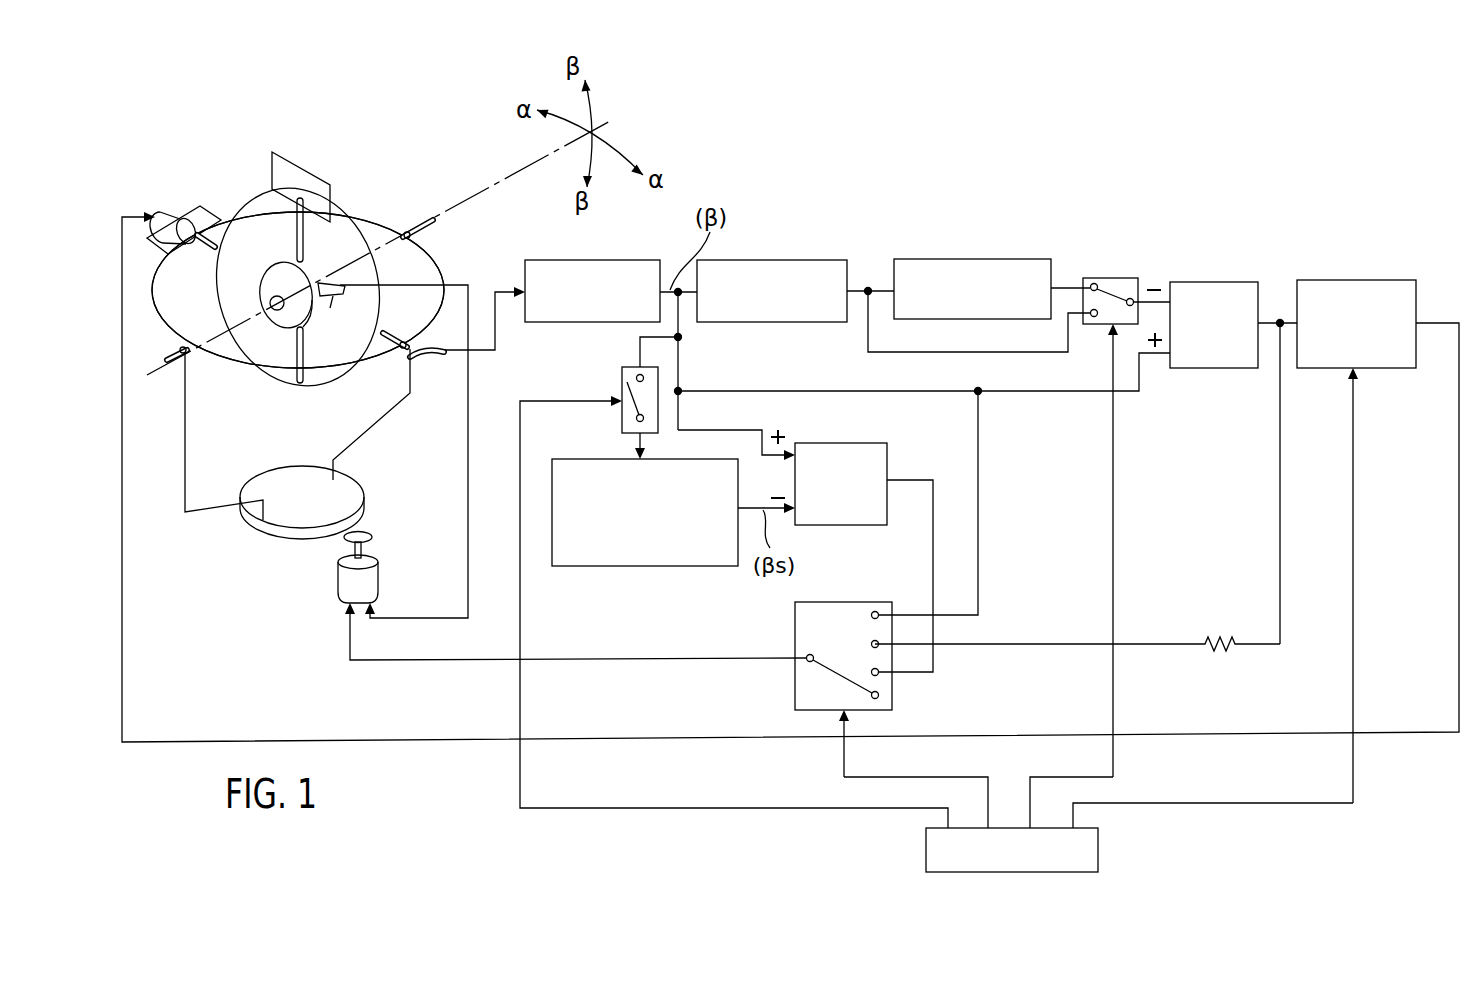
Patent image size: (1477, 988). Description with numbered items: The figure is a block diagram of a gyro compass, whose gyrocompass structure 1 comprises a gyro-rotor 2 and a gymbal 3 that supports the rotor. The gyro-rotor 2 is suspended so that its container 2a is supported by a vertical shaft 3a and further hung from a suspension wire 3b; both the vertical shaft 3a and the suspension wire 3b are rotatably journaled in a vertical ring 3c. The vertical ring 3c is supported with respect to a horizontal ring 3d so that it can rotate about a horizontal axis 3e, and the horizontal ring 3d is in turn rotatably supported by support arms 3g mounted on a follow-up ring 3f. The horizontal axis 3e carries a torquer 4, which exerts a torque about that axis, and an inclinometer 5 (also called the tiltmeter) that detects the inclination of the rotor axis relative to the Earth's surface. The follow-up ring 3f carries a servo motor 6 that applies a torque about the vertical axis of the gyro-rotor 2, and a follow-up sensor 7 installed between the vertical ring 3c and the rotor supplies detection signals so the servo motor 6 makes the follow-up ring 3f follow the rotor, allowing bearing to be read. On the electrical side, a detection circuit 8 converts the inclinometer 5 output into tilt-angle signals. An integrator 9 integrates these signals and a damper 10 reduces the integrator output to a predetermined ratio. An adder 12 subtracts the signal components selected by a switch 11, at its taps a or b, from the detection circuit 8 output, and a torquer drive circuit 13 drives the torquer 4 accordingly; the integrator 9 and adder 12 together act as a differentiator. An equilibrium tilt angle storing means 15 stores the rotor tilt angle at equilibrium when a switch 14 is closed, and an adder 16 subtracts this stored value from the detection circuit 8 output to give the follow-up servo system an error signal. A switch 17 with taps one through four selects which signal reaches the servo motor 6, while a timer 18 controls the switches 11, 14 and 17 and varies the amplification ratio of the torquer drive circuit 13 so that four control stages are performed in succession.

The gyrocompass structure 1 is at (441, 132).
The gyro-rotor 2 is at (258, 256).
The container 2a is at (314, 318).
The gymbal 3 is at (250, 160).
The vertical shaft 3a is at (247, 197).
The suspension wire 3b is at (300, 177).
The vertical ring 3c is at (347, 230).
The horizontal ring 3d is at (437, 268).
The horizontal axis 3e is at (203, 255).
The follow-up ring 3f is at (293, 480).
The support arms 3g is at (183, 475).
The torquer 4 is at (170, 212).
The inclinometer 5 is at (428, 366).
The servo motor 6 is at (338, 590).
The follow-up sensor 7 is at (333, 300).
The detection circuit 8 is at (606, 260).
The integrator 9 is at (782, 260).
The damper 10 is at (990, 258).
The switch 11 is at (1112, 278).
The adder 12 is at (1212, 282).
The torquer drive circuit 13 is at (1355, 280).
The switch 14 is at (620, 410).
The equilibrium tilt angle storing means 15 is at (615, 568).
The adder 16 is at (890, 463).
The switch 17 is at (822, 602).
The timer 18 is at (1098, 842).